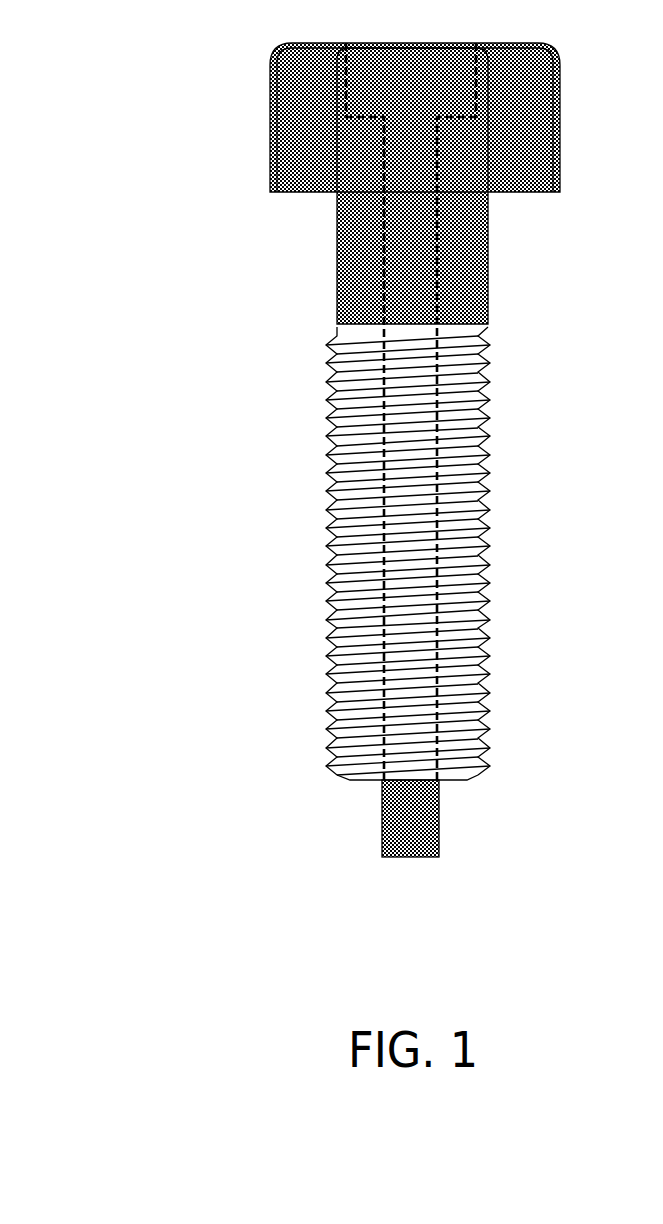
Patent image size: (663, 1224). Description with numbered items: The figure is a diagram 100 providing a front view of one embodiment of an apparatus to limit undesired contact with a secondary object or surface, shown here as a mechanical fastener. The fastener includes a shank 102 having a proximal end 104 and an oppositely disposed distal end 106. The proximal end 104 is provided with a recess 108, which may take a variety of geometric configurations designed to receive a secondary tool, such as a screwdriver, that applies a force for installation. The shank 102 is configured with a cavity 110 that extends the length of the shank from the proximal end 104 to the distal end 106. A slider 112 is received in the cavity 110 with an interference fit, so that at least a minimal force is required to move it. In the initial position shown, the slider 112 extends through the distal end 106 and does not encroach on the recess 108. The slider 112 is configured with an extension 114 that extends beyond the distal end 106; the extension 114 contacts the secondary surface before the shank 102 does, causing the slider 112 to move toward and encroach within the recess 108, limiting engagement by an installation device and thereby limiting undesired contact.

The diagram 100 is at (144, 912).
The shank 102 is at (248, 45).
The proximal end 104 is at (487, 43).
The distal end 106 is at (467, 777).
The recess 108 is at (345, 82).
The cavity 110 is at (475, 332).
The slider 112 is at (438, 818).
The extension 114 is at (250, 780).